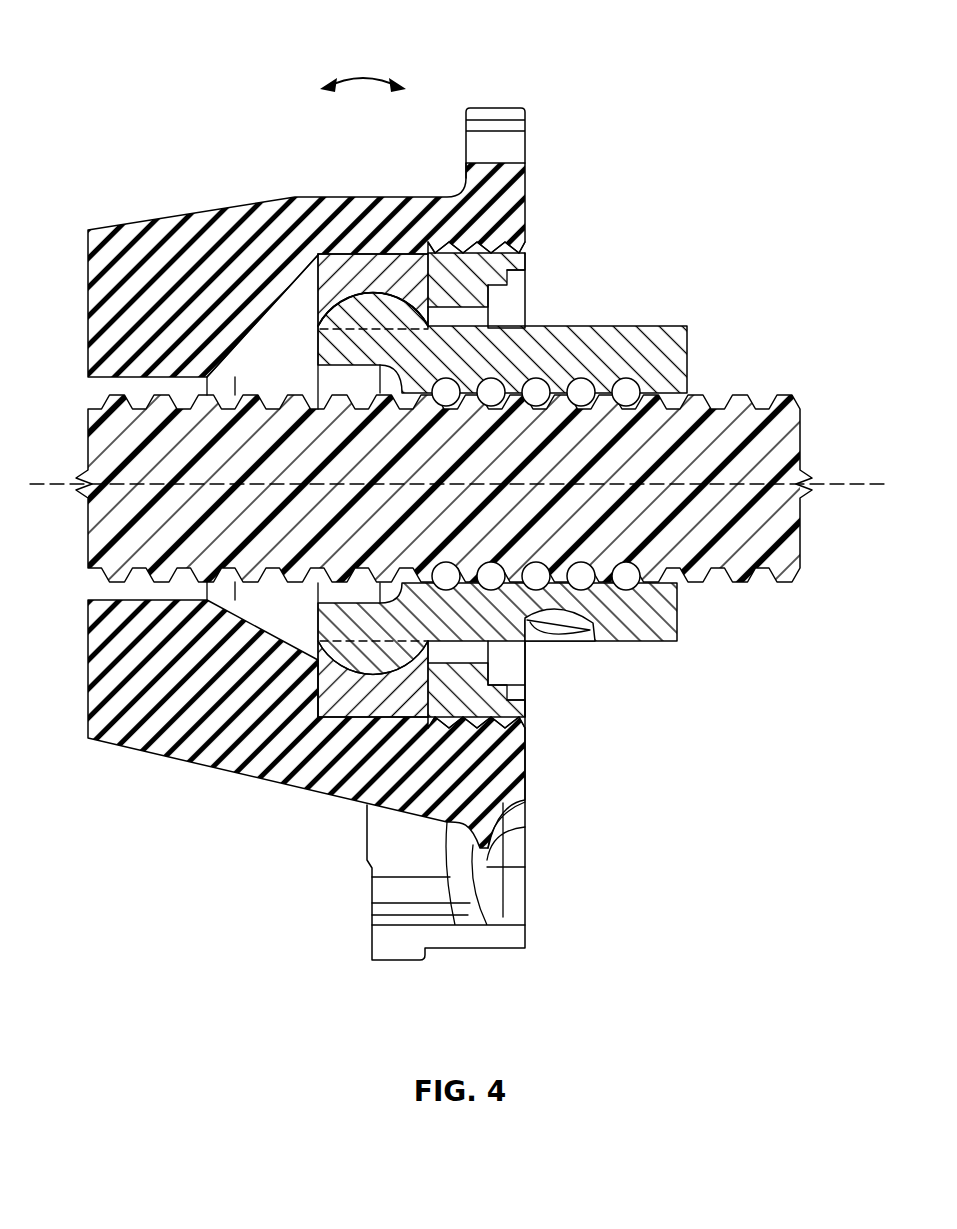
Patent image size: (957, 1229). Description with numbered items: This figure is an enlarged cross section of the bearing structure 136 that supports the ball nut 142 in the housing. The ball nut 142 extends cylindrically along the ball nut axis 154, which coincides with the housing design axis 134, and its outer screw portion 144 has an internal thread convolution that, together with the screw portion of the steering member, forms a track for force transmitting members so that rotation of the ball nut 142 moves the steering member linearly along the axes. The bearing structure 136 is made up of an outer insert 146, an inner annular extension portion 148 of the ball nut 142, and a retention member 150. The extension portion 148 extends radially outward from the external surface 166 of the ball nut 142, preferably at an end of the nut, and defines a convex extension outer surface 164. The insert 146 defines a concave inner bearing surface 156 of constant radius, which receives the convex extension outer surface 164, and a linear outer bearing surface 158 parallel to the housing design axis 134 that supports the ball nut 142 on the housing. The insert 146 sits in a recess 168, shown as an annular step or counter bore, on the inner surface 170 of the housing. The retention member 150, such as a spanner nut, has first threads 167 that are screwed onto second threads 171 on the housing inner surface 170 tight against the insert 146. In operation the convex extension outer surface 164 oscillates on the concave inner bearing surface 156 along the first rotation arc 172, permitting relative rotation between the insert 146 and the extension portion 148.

The housing design axis 134 is at (868, 487).
The ball nut axis 154 is at (444, 488).
The bearing structure 136 is at (526, 305).
The ball nut 142 is at (688, 360).
The outer screw portion 144 is at (704, 577).
The insert 146 is at (345, 303).
The extension portion 148 is at (347, 657).
The retention member 150 is at (514, 262).
The inner bearing surface 156 is at (320, 320).
The outer bearing surface 158 is at (370, 262).
The extension outer surface 164 is at (380, 672).
The external surface 166 is at (625, 642).
The first threads 167 is at (507, 698).
The recess 168 is at (262, 348).
The inner surface 170 is at (278, 312).
The second threads 171 is at (497, 727).
The first rotation arc 172 is at (364, 78).